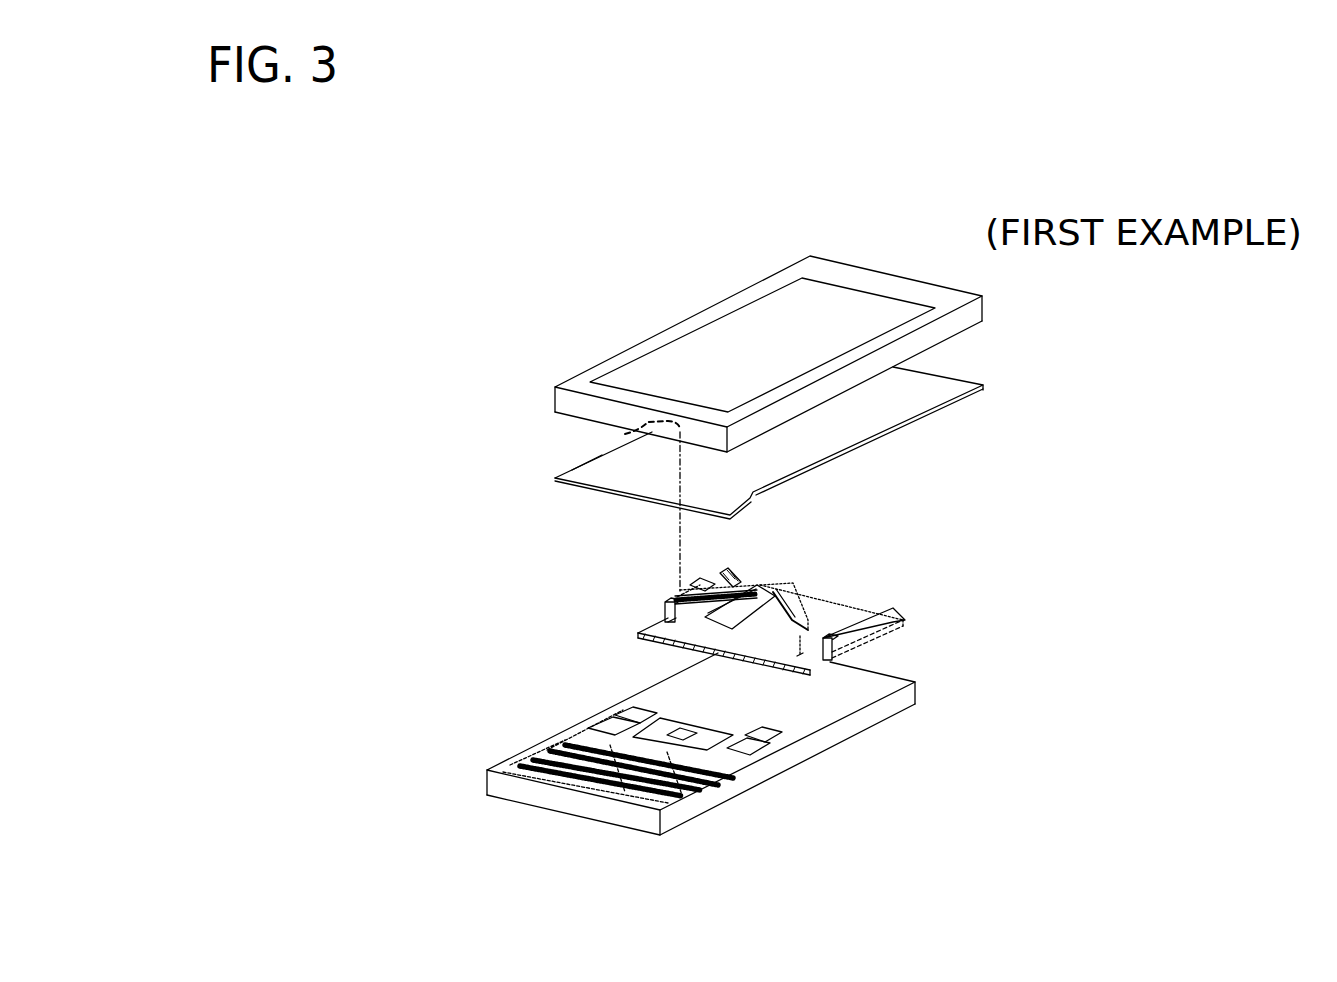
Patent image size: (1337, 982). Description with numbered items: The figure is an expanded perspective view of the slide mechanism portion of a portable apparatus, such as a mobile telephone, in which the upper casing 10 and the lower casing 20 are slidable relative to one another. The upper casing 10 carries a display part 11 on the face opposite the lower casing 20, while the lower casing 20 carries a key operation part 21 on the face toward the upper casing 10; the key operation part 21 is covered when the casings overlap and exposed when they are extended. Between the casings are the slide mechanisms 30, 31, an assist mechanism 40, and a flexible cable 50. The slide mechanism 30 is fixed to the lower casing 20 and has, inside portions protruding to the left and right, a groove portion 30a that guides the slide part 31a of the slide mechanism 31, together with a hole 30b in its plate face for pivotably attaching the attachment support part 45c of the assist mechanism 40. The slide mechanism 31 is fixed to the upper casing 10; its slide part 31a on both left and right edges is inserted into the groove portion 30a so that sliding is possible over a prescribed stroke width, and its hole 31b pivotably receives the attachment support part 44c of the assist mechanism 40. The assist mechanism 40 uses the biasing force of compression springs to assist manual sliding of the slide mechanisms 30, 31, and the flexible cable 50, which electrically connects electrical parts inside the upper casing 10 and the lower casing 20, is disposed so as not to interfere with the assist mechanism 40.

The upper casing 10 is at (765, 288).
The display part 11 is at (657, 362).
The slide mechanism 31 is at (860, 428).
The slide part 31a is at (608, 455).
The hole 31b is at (625, 434).
The flexible cable 50 is at (723, 610).
The assist mechanism 40 is at (787, 595).
The attachment support part 44c is at (682, 592).
The attachment support part 45c is at (810, 633).
The slide mechanism 30 is at (860, 632).
The groove portion 30a is at (675, 622).
The hole 30b is at (796, 654).
The lower casing 20 is at (763, 767).
The key operation part 21 is at (565, 745).